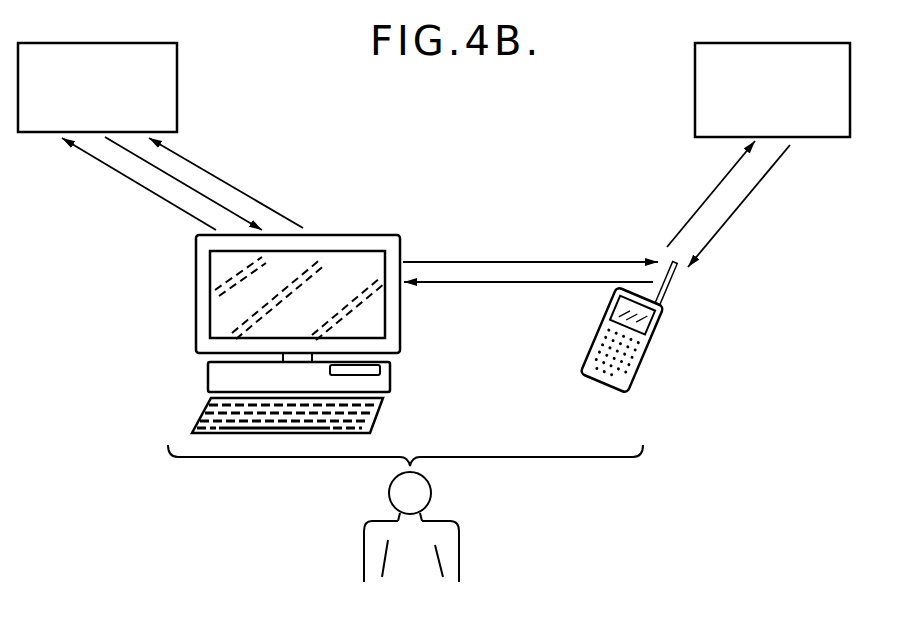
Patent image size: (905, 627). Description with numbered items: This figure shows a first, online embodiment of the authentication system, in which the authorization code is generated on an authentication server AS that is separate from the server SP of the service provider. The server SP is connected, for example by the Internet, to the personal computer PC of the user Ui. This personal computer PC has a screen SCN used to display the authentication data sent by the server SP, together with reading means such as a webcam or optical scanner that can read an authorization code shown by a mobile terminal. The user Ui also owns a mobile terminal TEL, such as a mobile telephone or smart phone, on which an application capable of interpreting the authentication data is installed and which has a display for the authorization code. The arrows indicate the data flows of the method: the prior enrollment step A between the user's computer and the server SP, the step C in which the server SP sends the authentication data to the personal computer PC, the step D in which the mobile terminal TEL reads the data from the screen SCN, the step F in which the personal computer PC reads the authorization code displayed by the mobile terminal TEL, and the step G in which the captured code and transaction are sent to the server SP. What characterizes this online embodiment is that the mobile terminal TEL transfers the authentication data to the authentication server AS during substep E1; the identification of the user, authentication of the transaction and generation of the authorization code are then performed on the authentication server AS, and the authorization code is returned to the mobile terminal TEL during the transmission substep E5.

The server of the service provider SP is at (97, 87).
The authentication server AS is at (772, 90).
The screen SCN is at (218, 308).
The personal computer PC is at (223, 375).
The mobile terminal TEL is at (637, 363).
The user Ui is at (452, 558).
The prior enrollment step A is at (139, 184).
The step of sending authentication data C is at (183, 183).
The step of sending the captured code to the server G is at (226, 183).
The step of the mobile terminal reading the data D is at (530, 245).
The step of reading the authorization code on the personal computer F is at (528, 297).
The substep of transferring authentication data to the authentication server E1 is at (711, 194).
The transmission substep E5 is at (739, 206).